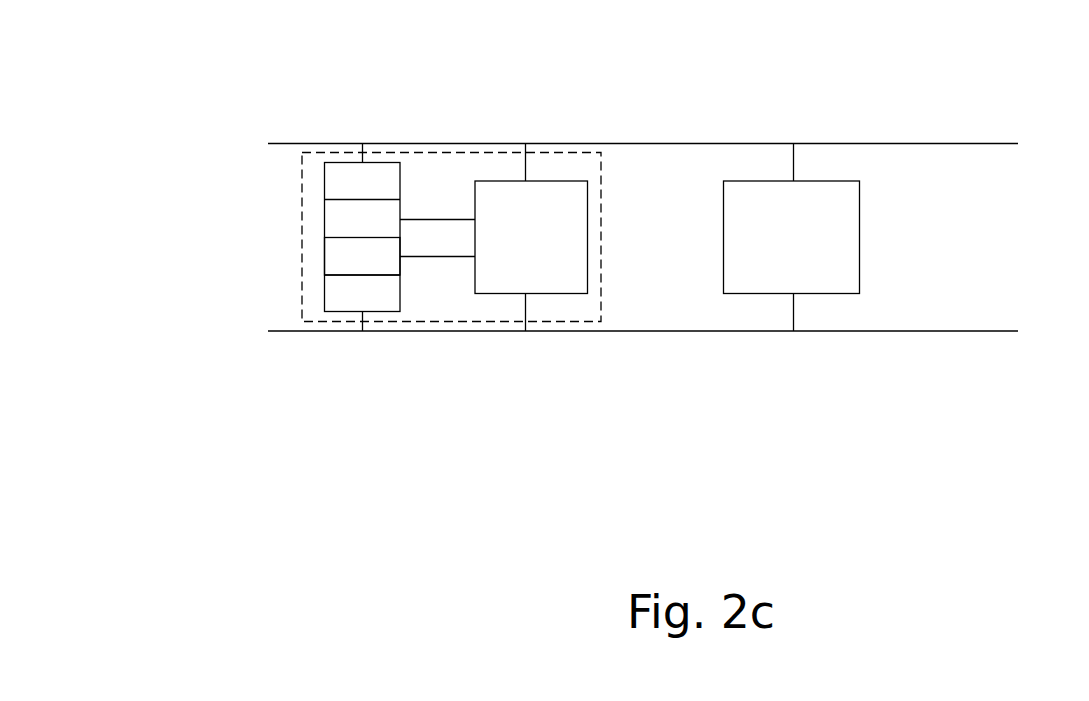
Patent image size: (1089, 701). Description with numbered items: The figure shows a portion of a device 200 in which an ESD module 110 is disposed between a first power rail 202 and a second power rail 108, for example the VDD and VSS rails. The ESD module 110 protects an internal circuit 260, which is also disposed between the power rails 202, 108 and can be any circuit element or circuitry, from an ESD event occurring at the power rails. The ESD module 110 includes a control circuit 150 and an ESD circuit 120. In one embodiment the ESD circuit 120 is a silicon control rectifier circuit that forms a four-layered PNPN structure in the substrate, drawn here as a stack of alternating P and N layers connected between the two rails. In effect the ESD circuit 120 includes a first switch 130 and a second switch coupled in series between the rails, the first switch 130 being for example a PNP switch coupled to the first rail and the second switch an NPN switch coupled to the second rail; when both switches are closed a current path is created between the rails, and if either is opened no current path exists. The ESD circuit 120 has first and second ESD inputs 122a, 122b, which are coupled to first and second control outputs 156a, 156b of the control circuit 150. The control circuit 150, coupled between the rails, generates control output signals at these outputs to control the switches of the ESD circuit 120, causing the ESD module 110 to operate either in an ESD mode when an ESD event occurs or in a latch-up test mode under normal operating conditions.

The second power rail 108 is at (953, 331).
The ESD module 110 is at (287, 309).
The ESD circuit 120 is at (323, 215).
The first ESD input 122a is at (408, 213).
The second ESD input 122b is at (408, 257).
The first switch 130 is at (322, 255).
The control circuit 150 is at (550, 181).
The first control output 156a is at (465, 219).
The second control output 156b is at (465, 265).
The device 200 is at (602, 272).
The first power rail 202 is at (830, 142).
The internal circuit 260 is at (859, 243).